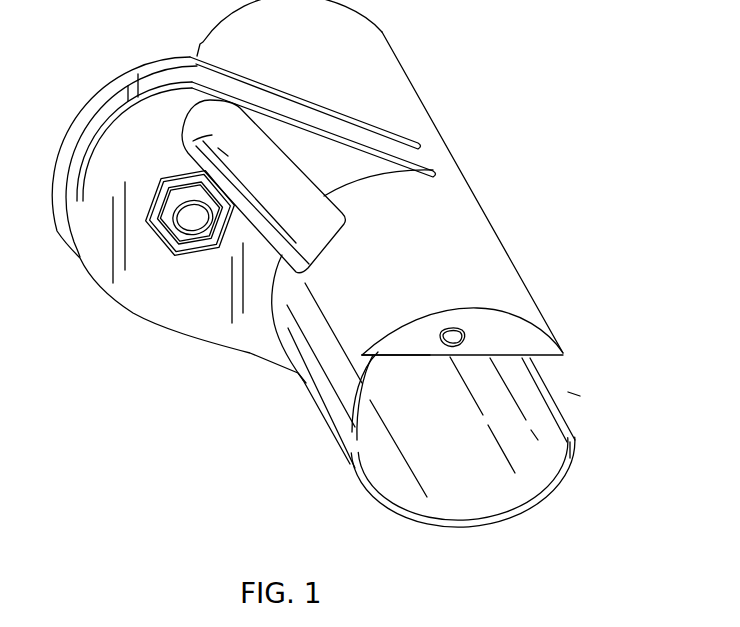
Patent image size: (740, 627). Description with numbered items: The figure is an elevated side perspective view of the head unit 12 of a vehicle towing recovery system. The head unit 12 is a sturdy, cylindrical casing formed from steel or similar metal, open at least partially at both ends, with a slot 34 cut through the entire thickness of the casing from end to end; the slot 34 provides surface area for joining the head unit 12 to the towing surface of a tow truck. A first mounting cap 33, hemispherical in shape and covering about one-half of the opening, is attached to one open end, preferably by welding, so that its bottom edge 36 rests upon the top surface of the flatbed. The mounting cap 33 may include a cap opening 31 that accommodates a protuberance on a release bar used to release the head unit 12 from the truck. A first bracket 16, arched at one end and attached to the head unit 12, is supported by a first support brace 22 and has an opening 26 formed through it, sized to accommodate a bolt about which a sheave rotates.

The head unit 12 is at (398, 92).
The first bracket 16 is at (225, 325).
The first support brace 22 is at (190, 148).
The opening 26 is at (157, 205).
The cap opening 31 is at (450, 330).
The first mounting cap 33 is at (507, 336).
The slot 34 is at (580, 396).
The bottom edge 36 is at (430, 358).